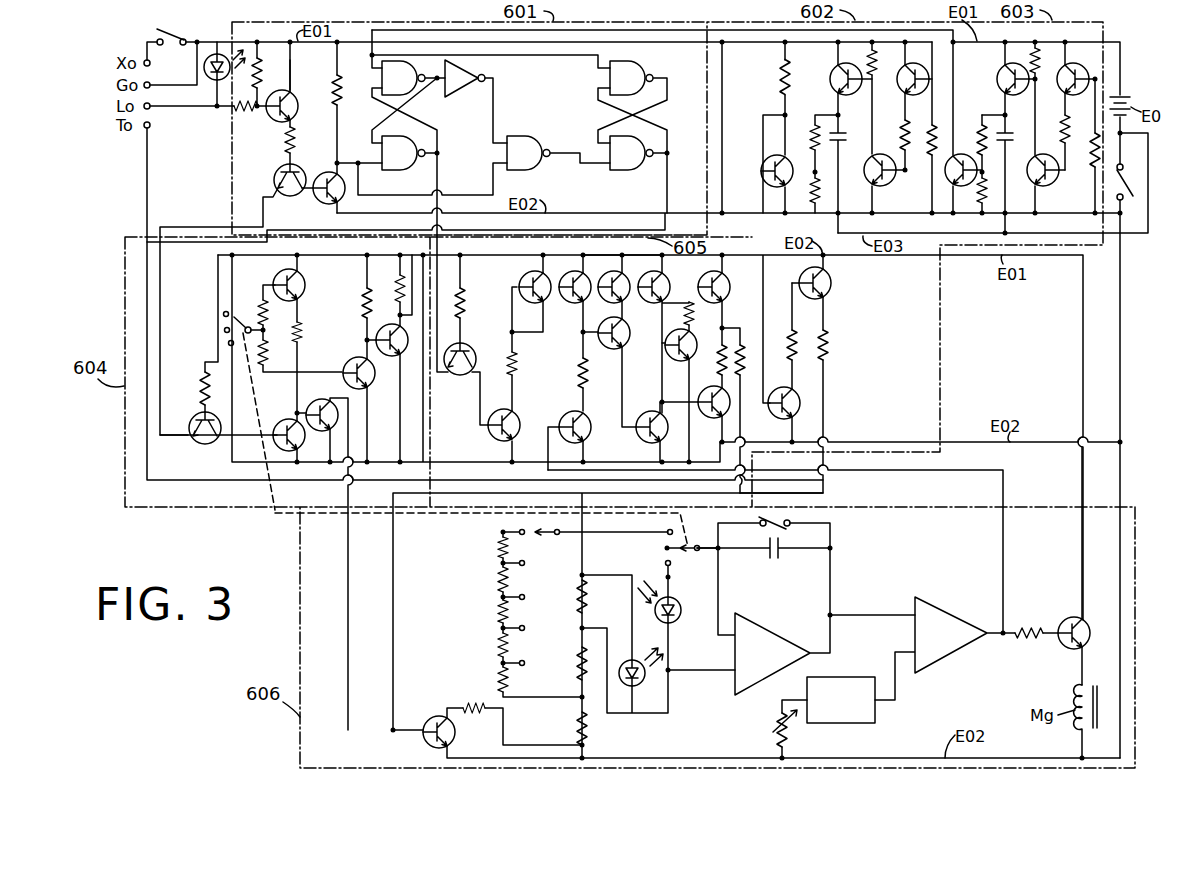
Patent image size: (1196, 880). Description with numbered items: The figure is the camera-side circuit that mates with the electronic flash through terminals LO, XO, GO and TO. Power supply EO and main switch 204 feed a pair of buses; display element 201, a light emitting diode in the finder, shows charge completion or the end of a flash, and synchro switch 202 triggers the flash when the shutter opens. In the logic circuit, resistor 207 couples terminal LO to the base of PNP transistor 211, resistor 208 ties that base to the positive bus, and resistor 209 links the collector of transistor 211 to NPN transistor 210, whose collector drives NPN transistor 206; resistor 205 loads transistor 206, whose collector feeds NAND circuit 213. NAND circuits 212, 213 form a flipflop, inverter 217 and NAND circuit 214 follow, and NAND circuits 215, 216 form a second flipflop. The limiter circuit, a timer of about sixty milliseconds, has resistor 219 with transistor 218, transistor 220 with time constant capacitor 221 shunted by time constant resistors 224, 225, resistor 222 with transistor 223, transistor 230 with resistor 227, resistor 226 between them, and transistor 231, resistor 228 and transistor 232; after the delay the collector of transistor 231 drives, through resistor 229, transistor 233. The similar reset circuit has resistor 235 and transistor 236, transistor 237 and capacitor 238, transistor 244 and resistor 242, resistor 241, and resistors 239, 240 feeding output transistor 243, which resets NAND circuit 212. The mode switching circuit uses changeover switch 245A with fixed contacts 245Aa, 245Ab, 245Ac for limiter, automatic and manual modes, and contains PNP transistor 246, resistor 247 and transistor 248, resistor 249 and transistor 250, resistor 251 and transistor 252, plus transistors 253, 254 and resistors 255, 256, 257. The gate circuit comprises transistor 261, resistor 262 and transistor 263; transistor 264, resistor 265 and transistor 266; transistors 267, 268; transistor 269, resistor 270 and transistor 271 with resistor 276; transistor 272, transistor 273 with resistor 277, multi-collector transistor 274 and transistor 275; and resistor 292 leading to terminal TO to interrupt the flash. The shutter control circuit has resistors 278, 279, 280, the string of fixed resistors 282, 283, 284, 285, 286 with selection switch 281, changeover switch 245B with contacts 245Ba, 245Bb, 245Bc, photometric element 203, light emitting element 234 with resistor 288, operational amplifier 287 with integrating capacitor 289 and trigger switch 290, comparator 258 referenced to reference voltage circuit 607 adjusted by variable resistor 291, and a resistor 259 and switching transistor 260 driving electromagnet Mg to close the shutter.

The display element 201 is at (214, 76).
The synchro switch 202 is at (172, 33).
The photometric light receiving element 203 is at (680, 620).
The main switch 204 is at (1136, 182).
The resistor 205 is at (296, 88).
The NPN transistor 206 is at (320, 198).
The resistor 207 is at (243, 111).
The resistor 208 is at (280, 40).
The resistor 209 is at (293, 130).
The NPN transistor 210 is at (282, 168).
The PNP transistor 211 is at (296, 110).
The NAND circuit 212 is at (382, 88).
The NAND circuit 213 is at (413, 170).
The NAND circuit 214 is at (540, 170).
The NAND circuit 215 is at (645, 66).
The NAND circuit 216 is at (635, 170).
The inverter 217 is at (456, 86).
The NPN transistor 218 is at (770, 182).
The resistor 219 is at (784, 78).
The NPN transistor 220 is at (832, 80).
The time constant capacitor 221 is at (845, 144).
The resistor 222 is at (868, 57).
The NPN transistor 223 is at (884, 190).
The time constant resistor 224 is at (815, 122).
The time constant resistor 225 is at (812, 205).
The resistor 226 is at (902, 123).
The resistor 227 is at (932, 157).
The resistor 228 is at (797, 332).
The resistor 229 is at (827, 343).
The NPN transistor 230 is at (920, 58).
The NPN transistor 231 is at (830, 290).
The NPN transistor 232 is at (800, 400).
The NPN transistor 233 is at (436, 726).
The light emitting element 234 is at (646, 683).
The resistor 235 is at (1033, 50).
The NPN transistor 236 is at (1043, 187).
The NPN transistor 237 is at (998, 73).
The capacitor 238 is at (1004, 118).
The resistor 239 is at (985, 112).
The resistor 240 is at (966, 138).
The resistor 241 is at (1062, 122).
The resistor 242 is at (1094, 166).
The output transistor 243 is at (950, 193).
The NPN transistor 244 is at (1070, 66).
The mode selecting changeover switch 245A is at (244, 322).
The fixed contact 245Aa is at (224, 313).
The fixed contact 245Ab is at (224, 330).
The fixed contact 245Ac is at (229, 344).
The mode selecting changeover switch 245B is at (686, 552).
The fixed contact 245Ba is at (664, 548).
The fixed contact 245Bb is at (665, 563).
The fixed contact 245Bc is at (669, 530).
The PNP transistor 246 is at (307, 288).
The resistor 247 is at (301, 327).
The NPN transistor 248 is at (289, 418).
The resistor 249 is at (365, 307).
The NPN transistor 250 is at (349, 366).
The resistor 251 is at (398, 290).
The NPN transistor 252 is at (375, 340).
The NPN transistor 253 is at (200, 444).
The NPN transistor 254 is at (327, 553).
The resistor 255 is at (204, 379).
The resistor 256 is at (260, 298).
The resistor 257 is at (266, 368).
The comparator 258 is at (955, 622).
The resistor 259 is at (1030, 648).
The switching transistor 260 is at (1063, 619).
The PNP transistor 261 is at (522, 280).
The resistor 262 is at (515, 362).
The NPN transistor 263 is at (491, 418).
The PNP transistor 264 is at (570, 304).
The resistor 265 is at (581, 374).
The NPN transistor 266 is at (591, 430).
The PNP transistor 267 is at (648, 302).
The NPN transistor 268 is at (652, 440).
The PNP transistor 269 is at (708, 275).
The resistor 270 is at (755, 325).
The NPN transistor 271 is at (712, 416).
The NPN transistor 272 is at (463, 384).
The NPN transistor 273 is at (665, 350).
The multi-collector transistor 274 is at (594, 337).
The PNP transistor 275 is at (610, 243).
The resistor 276 is at (463, 305).
The resistor 277 is at (684, 310).
The resistor 278 is at (578, 600).
The resistor 279 is at (578, 668).
The resistor 280 is at (578, 722).
The selection switch 281 is at (555, 535).
The fixed resistor 282 is at (499, 550).
The fixed resistor 283 is at (499, 582).
The fixed resistor 284 is at (499, 612).
The fixed resistor 285 is at (499, 650).
The fixed resistor 286 is at (499, 685).
The operational amplifier 287 is at (770, 640).
The resistor 288 is at (522, 725).
The integrating capacitor 289 is at (777, 559).
The trigger switch 290 is at (780, 527).
The variable resistor 291 is at (775, 728).
The resistor 292 is at (728, 343).
The reference voltage circuit 607 is at (863, 717).